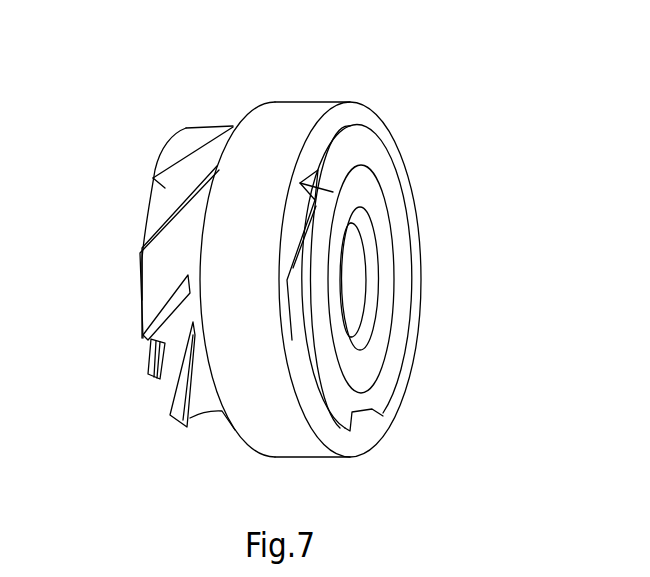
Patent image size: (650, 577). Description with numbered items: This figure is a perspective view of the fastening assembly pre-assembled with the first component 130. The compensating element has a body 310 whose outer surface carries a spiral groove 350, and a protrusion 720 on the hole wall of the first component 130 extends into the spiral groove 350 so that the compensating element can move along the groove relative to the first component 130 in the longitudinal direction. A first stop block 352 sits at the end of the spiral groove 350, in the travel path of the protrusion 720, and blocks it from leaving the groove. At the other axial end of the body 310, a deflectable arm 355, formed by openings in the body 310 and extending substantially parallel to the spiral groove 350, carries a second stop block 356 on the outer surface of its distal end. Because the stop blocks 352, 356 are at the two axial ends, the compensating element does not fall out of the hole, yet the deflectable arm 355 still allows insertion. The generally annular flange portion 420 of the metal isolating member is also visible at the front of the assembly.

The first component 130 is at (280, 118).
The body 310 is at (196, 127).
The spiral groove 350 is at (165, 188).
The first stop block 352 is at (300, 187).
The deflectable arm 355 is at (178, 334).
The second stop block 356 is at (155, 363).
The flange portion 420 is at (397, 223).
The protrusion 720 is at (368, 413).